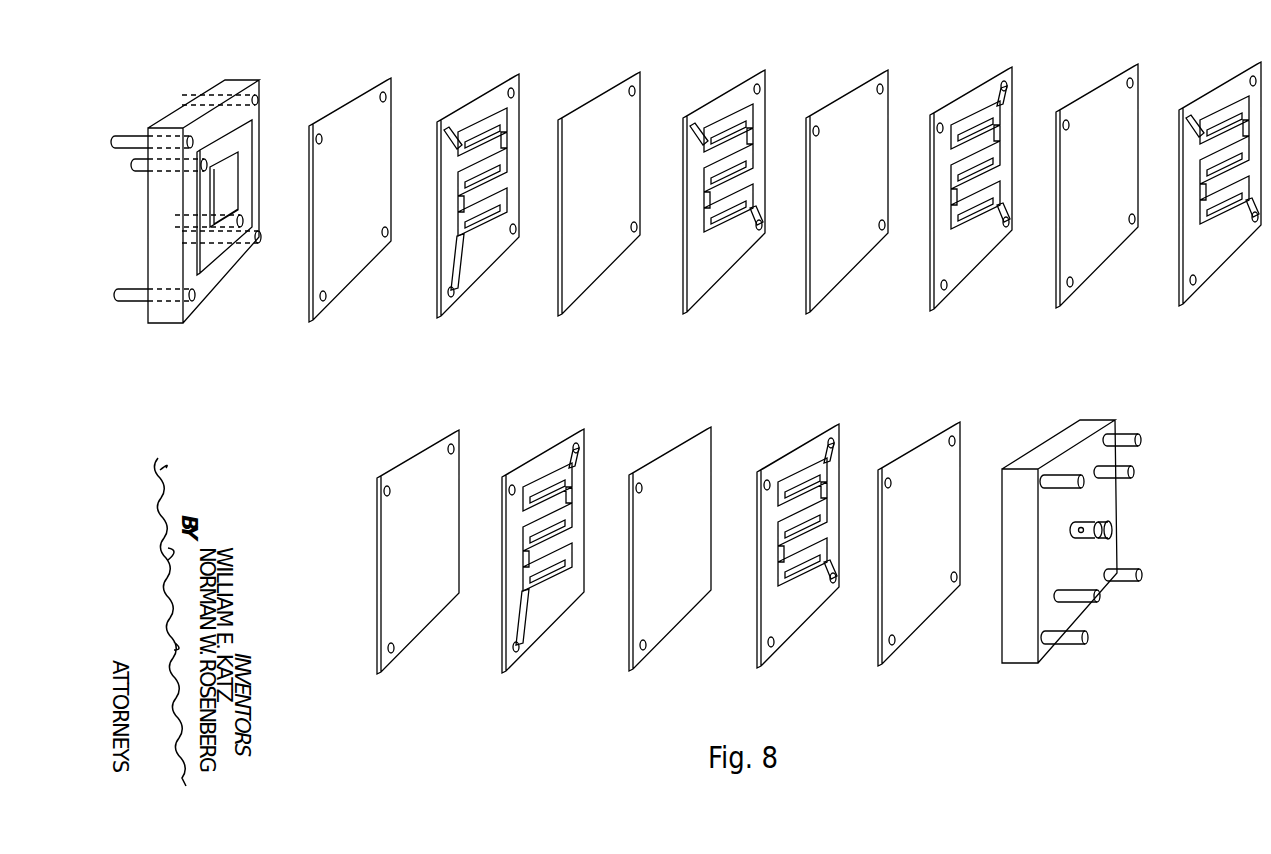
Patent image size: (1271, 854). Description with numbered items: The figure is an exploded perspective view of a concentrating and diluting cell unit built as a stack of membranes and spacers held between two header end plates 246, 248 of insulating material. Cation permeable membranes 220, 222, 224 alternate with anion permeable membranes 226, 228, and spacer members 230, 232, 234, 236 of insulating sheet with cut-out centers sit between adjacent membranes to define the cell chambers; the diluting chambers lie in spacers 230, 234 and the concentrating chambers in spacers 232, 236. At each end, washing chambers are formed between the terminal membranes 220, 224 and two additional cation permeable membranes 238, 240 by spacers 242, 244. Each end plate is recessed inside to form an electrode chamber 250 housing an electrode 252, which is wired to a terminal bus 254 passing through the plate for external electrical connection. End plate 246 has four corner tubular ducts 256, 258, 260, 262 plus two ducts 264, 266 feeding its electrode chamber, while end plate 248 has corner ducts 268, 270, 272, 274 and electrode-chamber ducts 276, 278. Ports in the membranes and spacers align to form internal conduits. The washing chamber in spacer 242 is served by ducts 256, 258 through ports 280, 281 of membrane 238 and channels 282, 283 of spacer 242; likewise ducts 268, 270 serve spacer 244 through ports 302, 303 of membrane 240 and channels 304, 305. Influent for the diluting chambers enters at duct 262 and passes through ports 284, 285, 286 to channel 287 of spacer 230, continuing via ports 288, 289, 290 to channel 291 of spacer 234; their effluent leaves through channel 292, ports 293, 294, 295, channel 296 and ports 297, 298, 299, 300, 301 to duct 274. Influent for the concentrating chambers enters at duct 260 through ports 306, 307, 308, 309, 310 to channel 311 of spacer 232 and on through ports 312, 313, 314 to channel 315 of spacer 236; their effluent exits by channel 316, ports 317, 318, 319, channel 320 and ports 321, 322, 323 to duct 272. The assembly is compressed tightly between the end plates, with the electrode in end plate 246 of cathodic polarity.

The cation permeable membrane 220 is at (621, 191).
The cation permeable membrane 222 is at (1095, 185).
The cation permeable membrane 224 is at (670, 547).
The anion permeable membrane 226 is at (849, 189).
The anion permeable membrane 228 is at (438, 552).
The spacer member 230 is at (726, 189).
The spacer member 232 is at (971, 187).
The spacer member 234 is at (1203, 181).
The spacer member 236 is at (543, 543).
The cation permeable membrane 238 is at (370, 194).
The cation permeable membrane 240 is at (938, 533).
The spacer member 242 is at (475, 192).
The spacer member 244 is at (798, 546).
The header end plate 246 is at (207, 191).
The header end plate 248 is at (1091, 530).
The electrode chamber 250 is at (235, 135).
The electrode 252 is at (227, 196).
The terminal bus 254 is at (1112, 528).
The tubular duct 256 is at (192, 297).
The tubular duct 258 is at (188, 135).
The tubular duct 260 is at (258, 97).
The tubular duct 262 is at (257, 237).
The tubular duct 264 is at (238, 224).
The tubular duct 266 is at (204, 165).
The duct 268 is at (1141, 571).
The duct 270 is at (1136, 434).
The duct 272 is at (1084, 647).
The duct 274 is at (1080, 490).
The duct 276 is at (1134, 476).
The duct 278 is at (1098, 596).
The port 280 is at (323, 292).
The port 281 is at (321, 139).
The channel 282 is at (455, 293).
The channel 283 is at (444, 140).
The port 284 is at (385, 235).
The port 285 is at (512, 234).
The port 286 is at (632, 229).
The channel 287 is at (761, 232).
The port 288 is at (882, 228).
The port 289 is at (1008, 227).
The port 290 is at (1131, 224).
The channel 291 is at (1255, 222).
The channel 292 is at (691, 135).
The port 293 is at (813, 133).
The port 294 is at (938, 132).
The port 295 is at (1063, 129).
The channel 296 is at (1187, 128).
The port 297 is at (389, 495).
The port 298 is at (510, 492).
The port 299 is at (641, 490).
The port 300 is at (764, 485).
The port 301 is at (891, 485).
The port 302 is at (954, 582).
The port 303 is at (955, 440).
The channel 304 is at (834, 581).
The channel 305 is at (834, 440).
The port 306 is at (385, 97).
The port 307 is at (514, 94).
The port 308 is at (635, 92).
The port 309 is at (760, 90).
The port 310 is at (883, 89).
The channel 311 is at (1008, 87).
The port 312 is at (1133, 85).
The port 313 is at (1251, 86).
The port 314 is at (453, 449).
The channel 315 is at (579, 448).
The channel 316 is at (948, 286).
The port 317 is at (1072, 285).
The port 318 is at (1194, 283).
The port 319 is at (393, 649).
The channel 320 is at (520, 650).
The port 321 is at (645, 647).
The port 322 is at (774, 644).
The port 323 is at (895, 641).